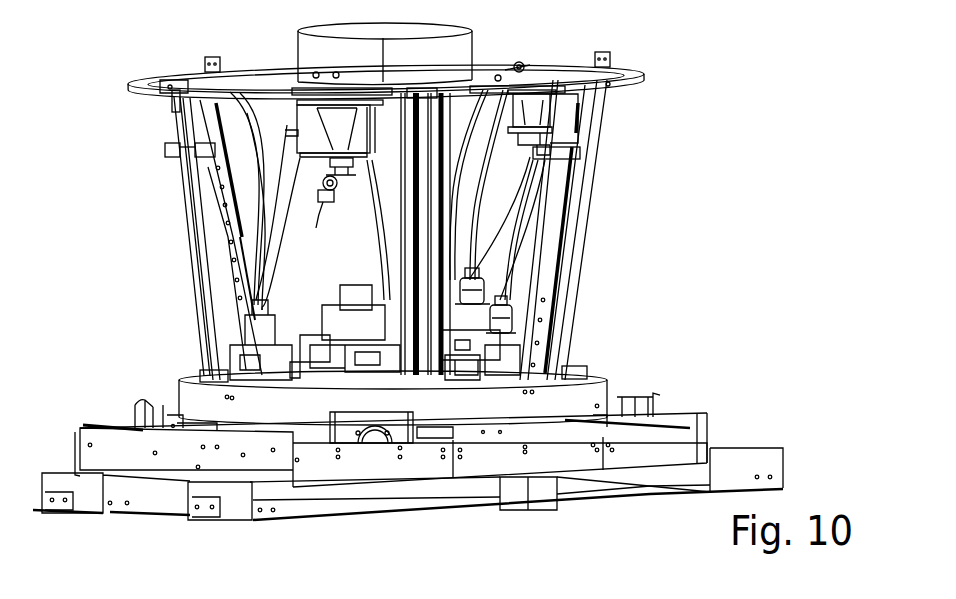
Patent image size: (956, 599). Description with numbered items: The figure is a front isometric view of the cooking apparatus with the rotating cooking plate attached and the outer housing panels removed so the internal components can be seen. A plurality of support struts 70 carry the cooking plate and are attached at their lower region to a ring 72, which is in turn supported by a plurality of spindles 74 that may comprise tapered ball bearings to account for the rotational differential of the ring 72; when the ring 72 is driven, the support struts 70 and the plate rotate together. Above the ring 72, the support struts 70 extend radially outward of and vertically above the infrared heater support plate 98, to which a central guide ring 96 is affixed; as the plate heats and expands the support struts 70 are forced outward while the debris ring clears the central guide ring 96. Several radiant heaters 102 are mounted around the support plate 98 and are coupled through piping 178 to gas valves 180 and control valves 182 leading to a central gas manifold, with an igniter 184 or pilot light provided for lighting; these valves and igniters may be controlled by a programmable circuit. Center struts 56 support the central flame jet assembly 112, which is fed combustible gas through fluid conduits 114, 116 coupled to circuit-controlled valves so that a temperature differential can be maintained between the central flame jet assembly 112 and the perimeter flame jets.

The center struts 56 is at (237, 230).
The support struts 70 is at (172, 148).
The ring 72 is at (180, 395).
The spindles 74 is at (217, 375).
The central guide ring 96 is at (400, 26).
The infrared heater support plate 98 is at (623, 84).
The radiant heaters 102 is at (550, 128).
The central flame jet assembly 112 is at (296, 137).
The fluid conduit 114 is at (348, 162).
The fluid conduit 116 is at (318, 205).
The piping 178 is at (507, 270).
The gas valves 180 is at (510, 320).
The control valves 182 is at (520, 347).
The igniter 184 is at (495, 70).